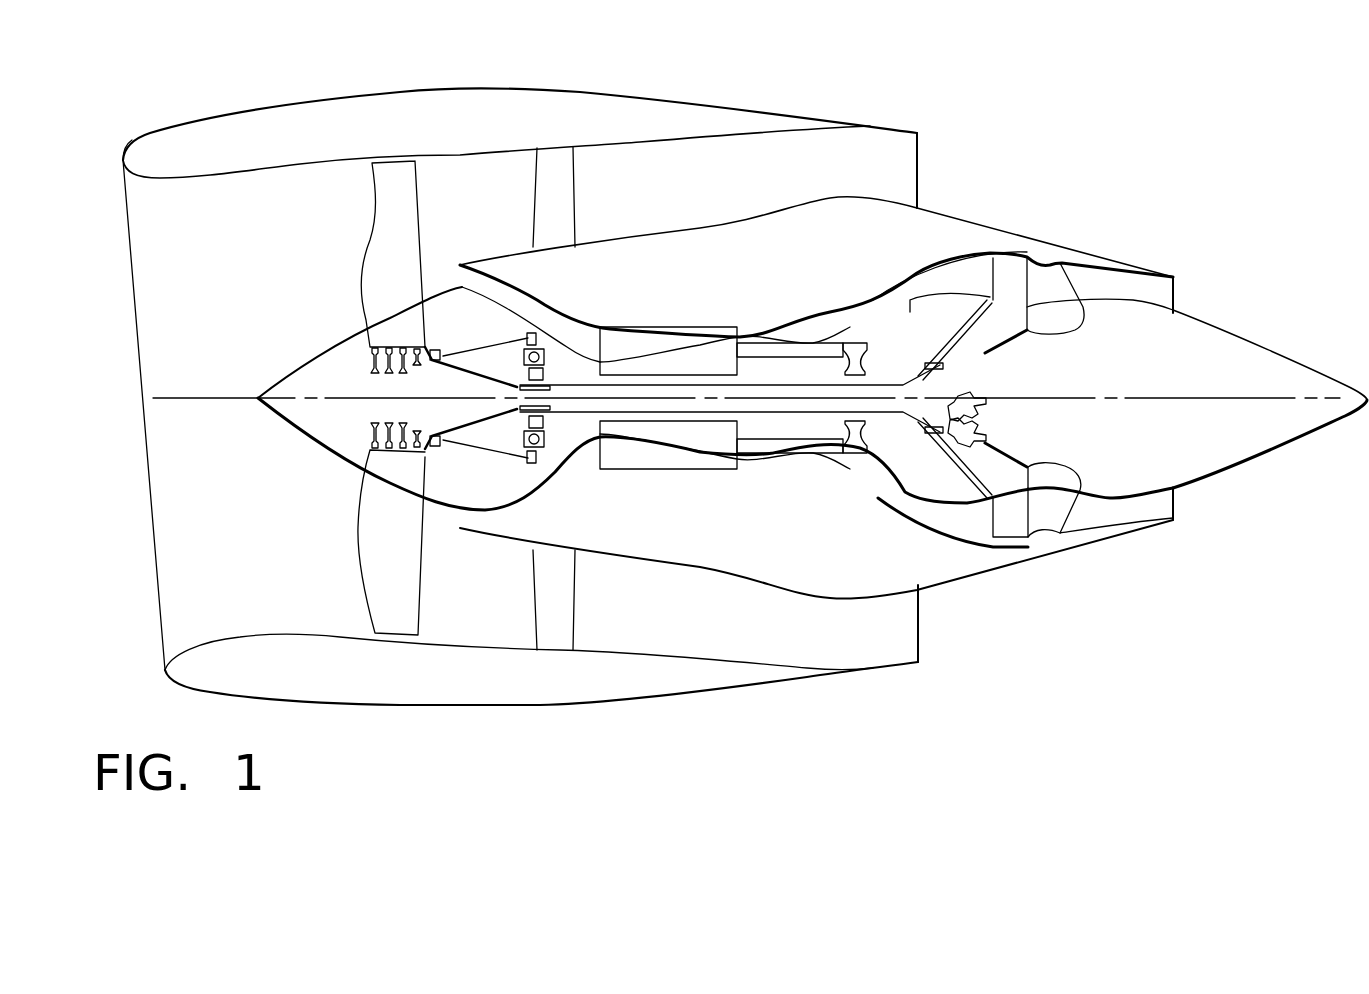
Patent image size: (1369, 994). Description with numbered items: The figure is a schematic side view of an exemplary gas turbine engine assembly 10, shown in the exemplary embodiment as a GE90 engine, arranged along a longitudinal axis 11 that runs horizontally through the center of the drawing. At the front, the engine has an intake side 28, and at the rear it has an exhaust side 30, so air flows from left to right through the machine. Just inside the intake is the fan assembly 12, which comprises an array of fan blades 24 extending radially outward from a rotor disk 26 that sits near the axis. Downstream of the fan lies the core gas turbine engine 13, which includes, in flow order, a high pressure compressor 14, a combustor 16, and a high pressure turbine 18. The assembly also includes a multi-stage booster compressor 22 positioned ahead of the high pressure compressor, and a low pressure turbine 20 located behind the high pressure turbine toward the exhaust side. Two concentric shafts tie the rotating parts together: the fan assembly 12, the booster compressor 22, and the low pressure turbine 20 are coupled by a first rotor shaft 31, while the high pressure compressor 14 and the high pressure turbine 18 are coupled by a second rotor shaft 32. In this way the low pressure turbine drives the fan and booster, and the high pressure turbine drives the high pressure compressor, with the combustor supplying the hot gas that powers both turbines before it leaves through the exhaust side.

The gas turbine engine assembly 10 is at (790, 48).
The longitudinal axis 11 is at (258, 398).
The fan assembly 12 is at (396, 562).
The core gas turbine engine 13 is at (827, 190).
The high pressure compressor 14 is at (628, 337).
The combustor 16 is at (813, 330).
The high pressure turbine 18 is at (851, 483).
The low pressure turbine 20 is at (955, 270).
The multi-stage booster compressor 22 is at (503, 283).
The fan blades 24 is at (388, 253).
The rotor disk 26 is at (398, 475).
The intake side 28 is at (100, 195).
The exhaust side 30 is at (972, 150).
The first rotor shaft 31 is at (626, 413).
The second rotor shaft 32 is at (677, 452).